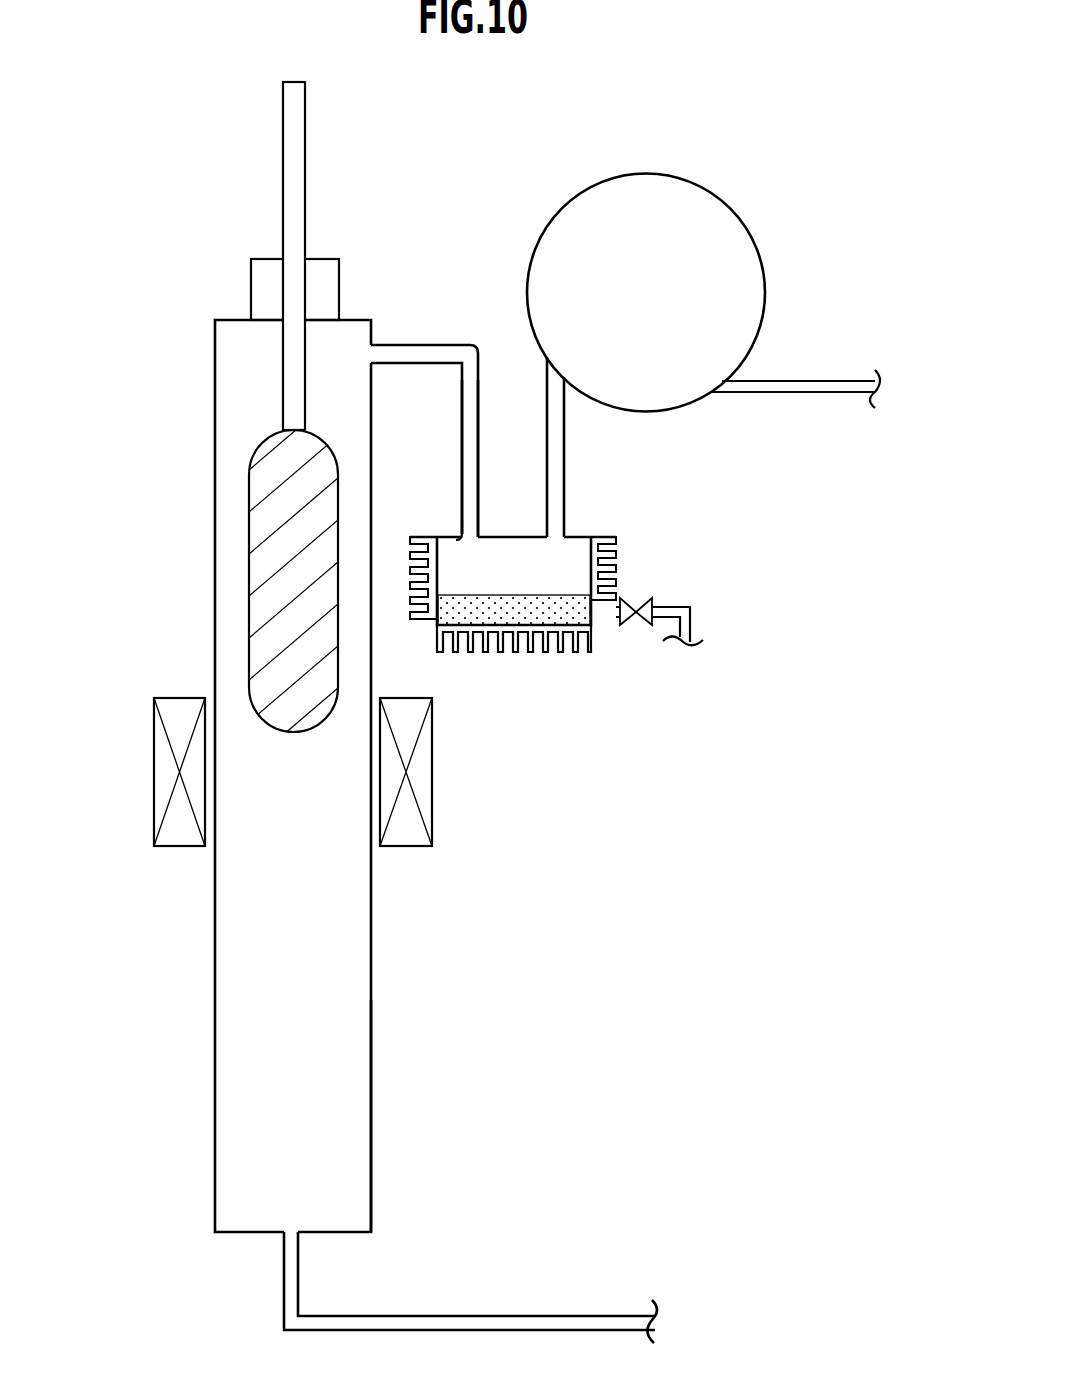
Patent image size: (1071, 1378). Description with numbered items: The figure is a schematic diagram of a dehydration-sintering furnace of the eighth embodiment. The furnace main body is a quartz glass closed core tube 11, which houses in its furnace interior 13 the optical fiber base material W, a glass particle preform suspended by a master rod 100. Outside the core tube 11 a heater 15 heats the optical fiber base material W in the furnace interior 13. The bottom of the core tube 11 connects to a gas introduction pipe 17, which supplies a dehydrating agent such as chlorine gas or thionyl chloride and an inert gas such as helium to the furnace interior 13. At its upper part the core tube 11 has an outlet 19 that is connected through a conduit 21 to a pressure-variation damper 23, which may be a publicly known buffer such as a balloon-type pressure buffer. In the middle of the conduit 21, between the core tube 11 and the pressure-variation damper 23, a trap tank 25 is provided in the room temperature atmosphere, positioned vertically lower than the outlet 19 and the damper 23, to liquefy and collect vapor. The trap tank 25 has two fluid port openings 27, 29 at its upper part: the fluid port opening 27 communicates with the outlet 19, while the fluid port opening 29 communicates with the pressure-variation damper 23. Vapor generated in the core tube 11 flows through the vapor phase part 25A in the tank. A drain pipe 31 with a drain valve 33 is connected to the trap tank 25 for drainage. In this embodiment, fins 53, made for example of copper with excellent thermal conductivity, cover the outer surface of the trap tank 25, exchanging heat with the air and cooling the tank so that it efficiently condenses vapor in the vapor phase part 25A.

The core tube 11 is at (370, 993).
The furnace interior 13 is at (357, 1098).
The heater 15 is at (425, 776).
The gas introduction pipe 17 is at (538, 1320).
The outlet 19 is at (372, 353).
The conduit 21 is at (462, 478).
The pressure-variation damper 23 is at (728, 201).
The trap tank 25 is at (621, 546).
The vapor phase part 25A is at (555, 583).
The fluid port opening 27 is at (465, 545).
The fluid port opening 29 is at (562, 530).
The drain pipe 31 is at (668, 605).
The drain valve 33 is at (636, 597).
The fins 53 is at (458, 652).
The master rod 100 is at (300, 186).
The optical fiber base material W is at (275, 583).